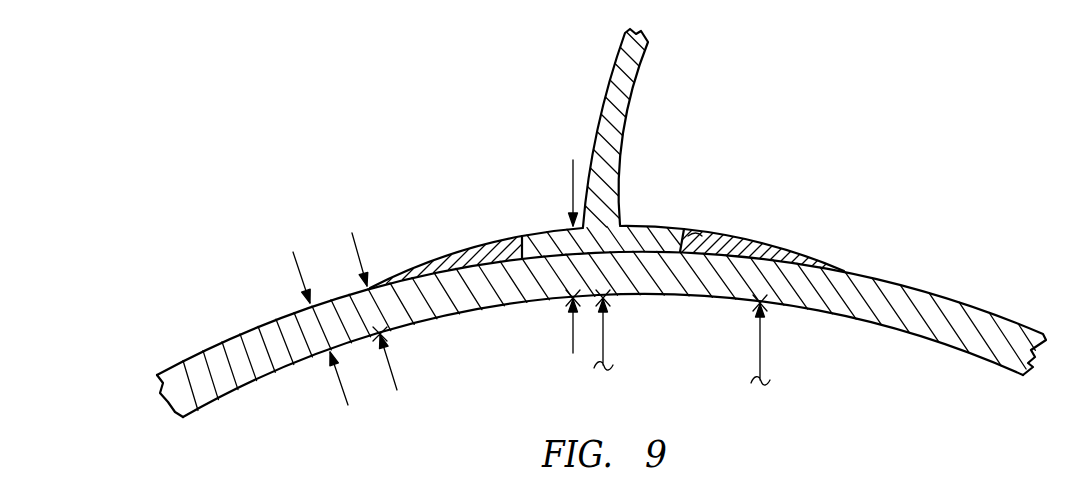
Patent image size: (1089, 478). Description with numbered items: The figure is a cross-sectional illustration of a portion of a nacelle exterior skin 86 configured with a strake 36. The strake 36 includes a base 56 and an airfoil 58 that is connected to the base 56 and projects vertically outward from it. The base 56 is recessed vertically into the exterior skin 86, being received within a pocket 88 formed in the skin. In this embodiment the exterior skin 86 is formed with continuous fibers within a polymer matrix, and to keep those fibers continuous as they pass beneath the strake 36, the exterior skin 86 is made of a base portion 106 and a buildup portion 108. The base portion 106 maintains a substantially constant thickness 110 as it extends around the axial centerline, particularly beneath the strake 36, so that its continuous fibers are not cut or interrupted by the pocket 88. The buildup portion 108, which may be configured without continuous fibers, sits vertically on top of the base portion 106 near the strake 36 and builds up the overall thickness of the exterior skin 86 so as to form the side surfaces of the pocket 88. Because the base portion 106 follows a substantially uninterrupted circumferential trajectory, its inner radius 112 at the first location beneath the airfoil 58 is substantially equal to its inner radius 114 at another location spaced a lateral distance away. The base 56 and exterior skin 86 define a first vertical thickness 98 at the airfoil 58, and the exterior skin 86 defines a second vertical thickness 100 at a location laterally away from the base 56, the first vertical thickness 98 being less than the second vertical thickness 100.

The strake 36 is at (607, 158).
The airfoil 58 is at (625, 128).
The base 56 is at (655, 225).
The pocket 88 is at (702, 232).
The buildup portion 108 is at (478, 243).
The exterior skin 86 is at (976, 302).
The base portion 106 is at (281, 377).
The second vertical thickness 100 is at (395, 379).
The thickness 110 is at (343, 391).
The first vertical thickness 98 is at (573, 345).
The inner radius 112 is at (606, 331).
The inner radius 114 is at (760, 352).